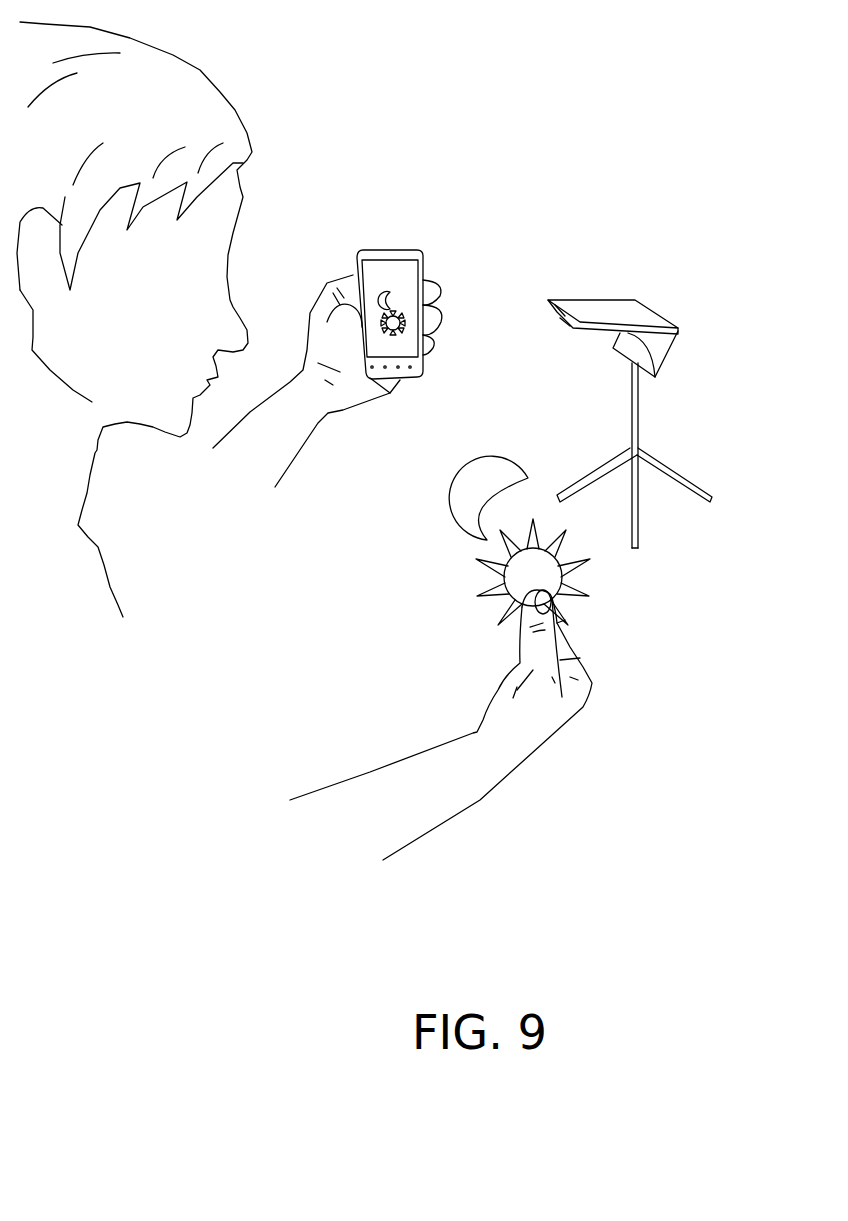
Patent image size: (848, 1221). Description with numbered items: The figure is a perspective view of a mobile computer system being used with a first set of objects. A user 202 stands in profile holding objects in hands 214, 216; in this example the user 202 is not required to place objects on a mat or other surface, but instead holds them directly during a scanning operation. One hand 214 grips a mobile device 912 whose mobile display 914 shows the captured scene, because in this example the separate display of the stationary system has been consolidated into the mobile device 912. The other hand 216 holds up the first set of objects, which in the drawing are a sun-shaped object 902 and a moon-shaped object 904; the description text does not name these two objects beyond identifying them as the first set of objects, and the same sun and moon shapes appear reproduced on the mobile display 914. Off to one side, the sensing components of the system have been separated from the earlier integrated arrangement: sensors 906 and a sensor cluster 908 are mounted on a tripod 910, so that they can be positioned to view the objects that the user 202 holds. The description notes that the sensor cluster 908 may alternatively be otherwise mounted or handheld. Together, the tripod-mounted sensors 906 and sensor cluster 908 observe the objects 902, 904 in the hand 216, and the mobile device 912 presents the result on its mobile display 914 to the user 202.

The user 202 is at (175, 77).
The hand 214 is at (288, 448).
The hand 216 is at (413, 813).
The sun-shaped object 902 is at (510, 592).
The moon-shaped object 904 is at (455, 508).
The sensors 906 is at (630, 332).
The sensor cluster 908 is at (610, 305).
The tripod 910 is at (670, 468).
The mobile device 912 is at (397, 247).
The mobile display 914 is at (400, 309).